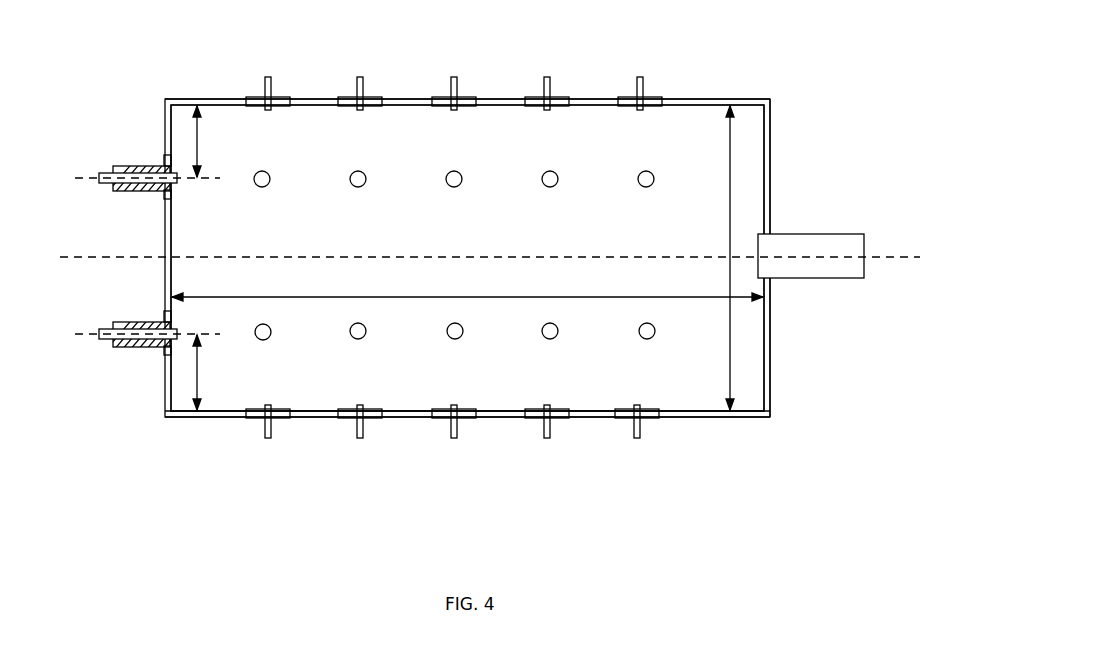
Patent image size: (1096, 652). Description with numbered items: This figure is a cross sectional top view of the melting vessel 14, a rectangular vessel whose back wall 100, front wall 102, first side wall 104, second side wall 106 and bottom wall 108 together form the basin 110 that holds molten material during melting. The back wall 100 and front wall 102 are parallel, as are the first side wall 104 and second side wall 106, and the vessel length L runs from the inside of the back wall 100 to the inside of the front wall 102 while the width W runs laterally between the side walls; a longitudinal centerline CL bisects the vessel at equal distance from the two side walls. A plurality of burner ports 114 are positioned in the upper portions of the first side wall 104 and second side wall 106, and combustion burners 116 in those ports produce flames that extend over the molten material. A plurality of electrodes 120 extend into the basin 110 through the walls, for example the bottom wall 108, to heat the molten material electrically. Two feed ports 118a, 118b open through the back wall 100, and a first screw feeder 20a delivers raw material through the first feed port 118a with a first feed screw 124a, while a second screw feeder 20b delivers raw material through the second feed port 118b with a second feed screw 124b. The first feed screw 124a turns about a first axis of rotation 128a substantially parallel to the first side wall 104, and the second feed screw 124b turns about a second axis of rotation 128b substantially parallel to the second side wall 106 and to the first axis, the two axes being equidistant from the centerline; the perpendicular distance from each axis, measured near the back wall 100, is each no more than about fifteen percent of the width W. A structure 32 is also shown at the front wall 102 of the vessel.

The melting vessel 14 is at (818, 188).
The first screw feeder 20a is at (128, 156).
The second screw feeder 20b is at (137, 312).
The connector block 32 is at (833, 279).
The back wall 100 is at (165, 402).
The front wall 102 is at (772, 157).
The first side wall 104 is at (710, 98).
The second side wall 106 is at (692, 418).
The bottom wall 108 is at (237, 410).
The basin 110 is at (243, 231).
The burner ports 114 is at (262, 95).
The combustion burners 116 is at (356, 97).
The first feed port 118a is at (165, 160).
The second feed port 118b is at (165, 347).
The electrodes 120 is at (270, 180).
The first feed screw 124a is at (131, 195).
The second feed screw 124b is at (124, 348).
The first axis of rotation 128a is at (92, 181).
The second axis of rotation 128b is at (187, 336).